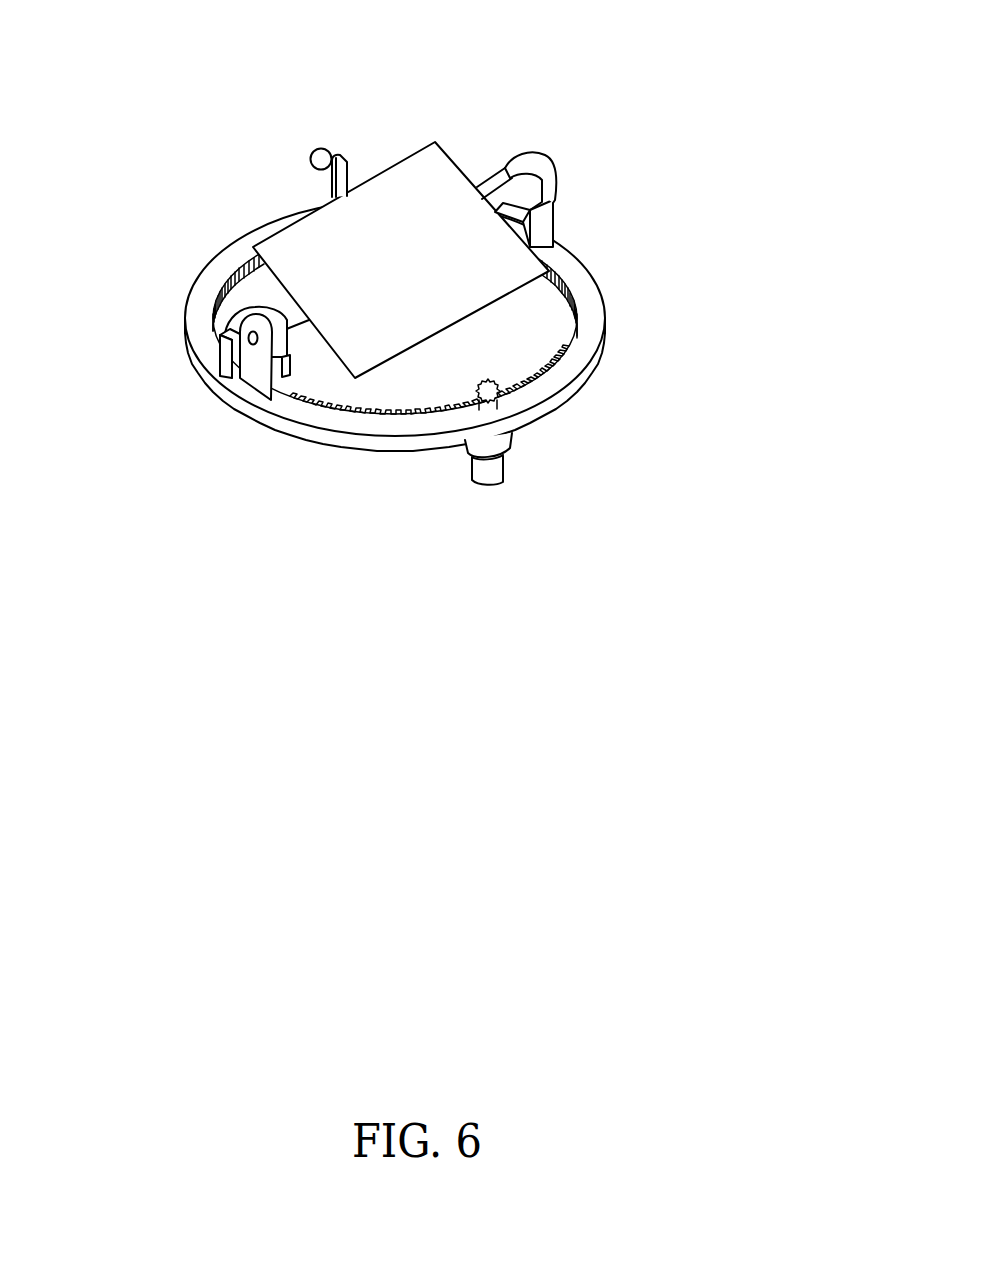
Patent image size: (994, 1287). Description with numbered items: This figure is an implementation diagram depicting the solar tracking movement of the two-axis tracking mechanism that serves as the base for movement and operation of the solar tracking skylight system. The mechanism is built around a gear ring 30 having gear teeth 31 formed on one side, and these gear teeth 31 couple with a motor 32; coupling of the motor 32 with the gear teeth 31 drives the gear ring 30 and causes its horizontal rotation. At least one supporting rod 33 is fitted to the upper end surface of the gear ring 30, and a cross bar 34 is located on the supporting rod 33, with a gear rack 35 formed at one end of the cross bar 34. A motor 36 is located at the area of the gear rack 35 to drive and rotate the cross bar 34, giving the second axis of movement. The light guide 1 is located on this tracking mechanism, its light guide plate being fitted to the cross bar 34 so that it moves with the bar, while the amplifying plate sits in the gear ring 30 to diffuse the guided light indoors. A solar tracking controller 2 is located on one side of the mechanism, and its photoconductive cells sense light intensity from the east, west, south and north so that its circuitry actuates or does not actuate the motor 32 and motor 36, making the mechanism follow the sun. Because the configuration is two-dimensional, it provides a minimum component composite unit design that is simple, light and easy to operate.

The light guide 1 is at (427, 278).
The solar tracking controller 2 is at (322, 152).
The gear ring 30 is at (598, 358).
The gear teeth 31 is at (238, 268).
The motor 32 is at (503, 483).
The supporting rod 33 is at (532, 160).
The cross bar 34 is at (496, 195).
The gear rack 35 is at (280, 397).
The motor 36 is at (222, 347).